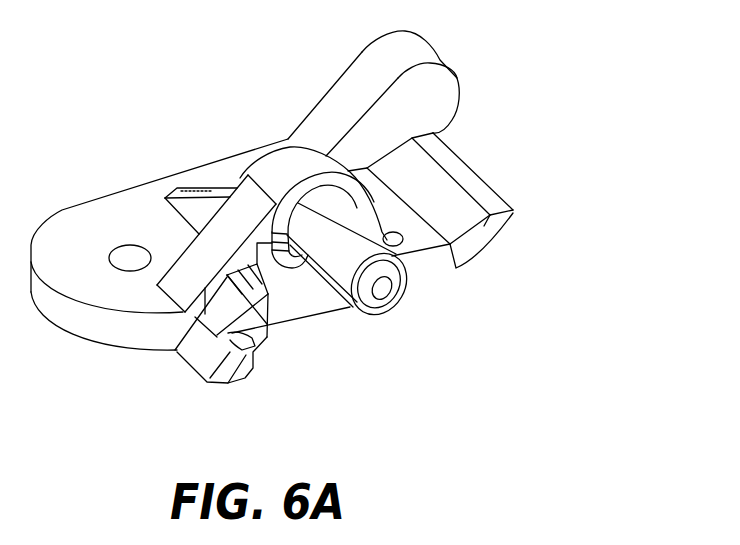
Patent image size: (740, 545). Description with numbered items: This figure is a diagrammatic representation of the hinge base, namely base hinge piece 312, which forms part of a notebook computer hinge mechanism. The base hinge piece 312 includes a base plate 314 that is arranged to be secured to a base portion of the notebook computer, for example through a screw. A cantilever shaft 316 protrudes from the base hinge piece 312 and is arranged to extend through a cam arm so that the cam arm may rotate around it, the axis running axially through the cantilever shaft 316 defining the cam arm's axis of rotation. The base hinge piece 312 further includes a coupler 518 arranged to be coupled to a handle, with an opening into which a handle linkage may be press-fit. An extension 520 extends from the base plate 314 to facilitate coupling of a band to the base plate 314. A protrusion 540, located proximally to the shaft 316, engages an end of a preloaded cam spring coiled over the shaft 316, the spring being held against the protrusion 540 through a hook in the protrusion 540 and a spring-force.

The base hinge piece 312 is at (620, 105).
The base plate 314 is at (65, 232).
The cantilever shaft 316 is at (400, 290).
The coupler 518 is at (440, 93).
The extension 520 is at (427, 177).
The protrusion 540 is at (238, 380).